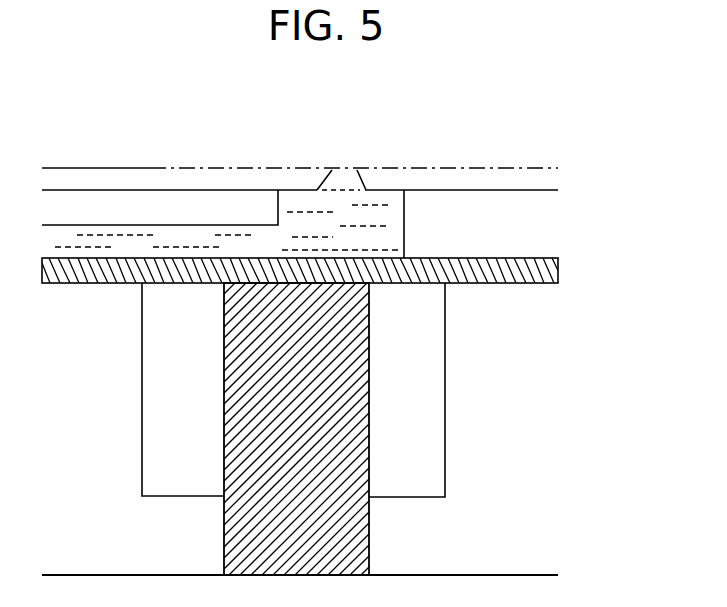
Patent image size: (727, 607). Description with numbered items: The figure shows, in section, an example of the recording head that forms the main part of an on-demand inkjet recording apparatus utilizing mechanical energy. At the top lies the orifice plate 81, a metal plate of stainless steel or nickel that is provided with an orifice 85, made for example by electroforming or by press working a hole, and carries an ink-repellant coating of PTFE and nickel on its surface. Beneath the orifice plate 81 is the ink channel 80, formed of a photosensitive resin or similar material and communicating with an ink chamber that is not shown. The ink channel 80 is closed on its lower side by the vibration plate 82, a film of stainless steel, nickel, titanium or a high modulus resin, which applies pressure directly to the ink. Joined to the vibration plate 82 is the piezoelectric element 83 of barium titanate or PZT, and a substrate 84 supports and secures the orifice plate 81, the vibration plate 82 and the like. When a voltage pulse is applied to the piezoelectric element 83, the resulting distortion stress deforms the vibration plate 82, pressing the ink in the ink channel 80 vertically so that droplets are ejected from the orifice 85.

The ink channel 80 is at (187, 208).
The orifice plate 81 is at (523, 178).
The vibration plate 82 is at (507, 283).
The piezoelectric element 83 is at (340, 413).
The substrate 84 is at (505, 365).
The orifice 85 is at (342, 178).